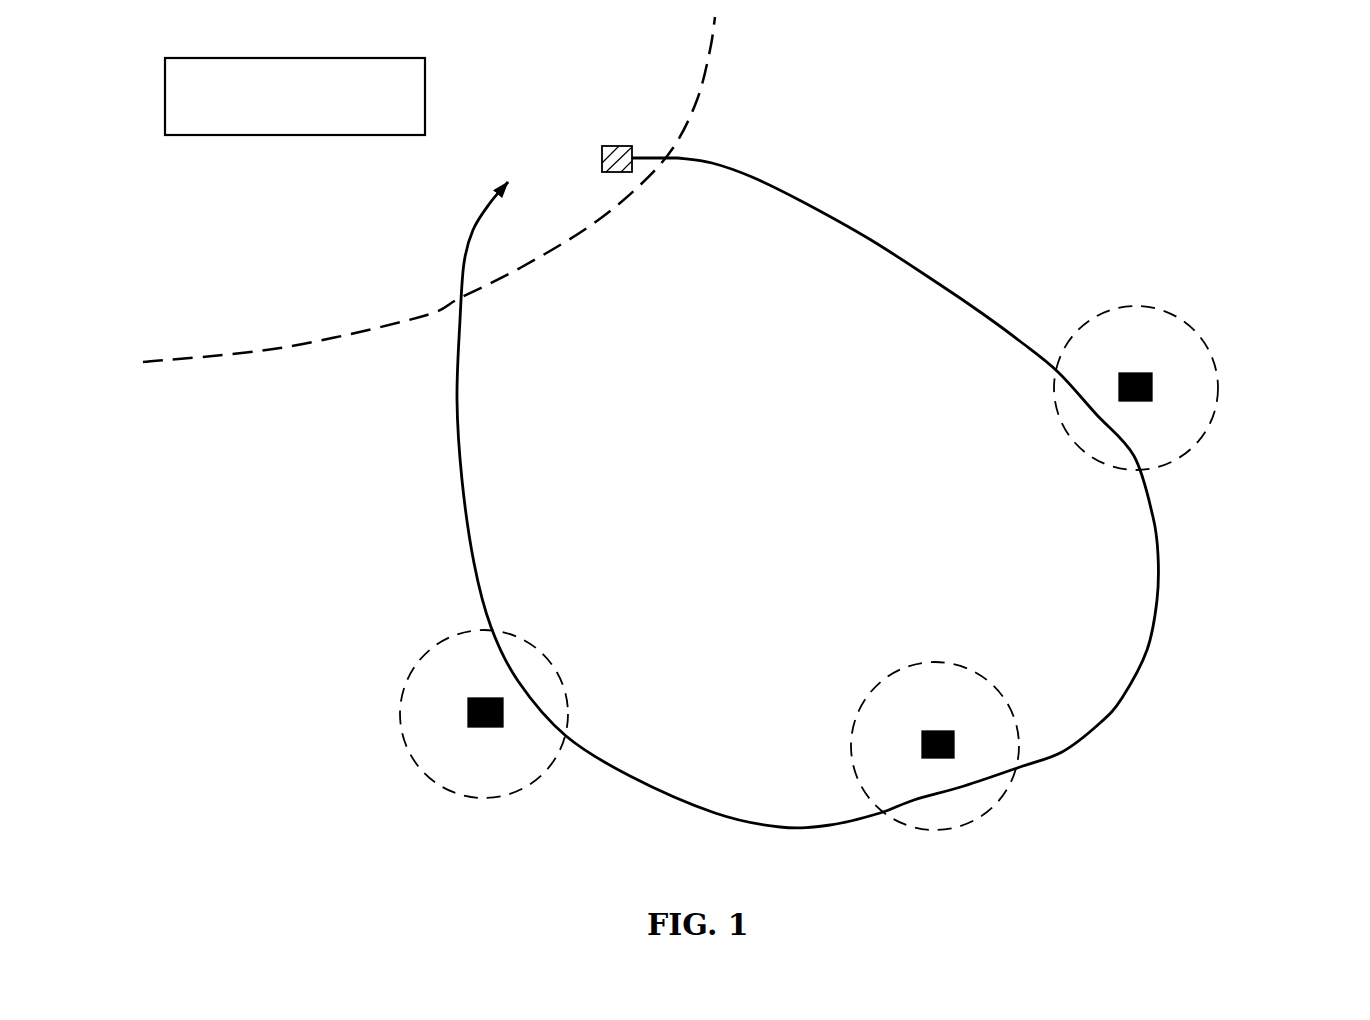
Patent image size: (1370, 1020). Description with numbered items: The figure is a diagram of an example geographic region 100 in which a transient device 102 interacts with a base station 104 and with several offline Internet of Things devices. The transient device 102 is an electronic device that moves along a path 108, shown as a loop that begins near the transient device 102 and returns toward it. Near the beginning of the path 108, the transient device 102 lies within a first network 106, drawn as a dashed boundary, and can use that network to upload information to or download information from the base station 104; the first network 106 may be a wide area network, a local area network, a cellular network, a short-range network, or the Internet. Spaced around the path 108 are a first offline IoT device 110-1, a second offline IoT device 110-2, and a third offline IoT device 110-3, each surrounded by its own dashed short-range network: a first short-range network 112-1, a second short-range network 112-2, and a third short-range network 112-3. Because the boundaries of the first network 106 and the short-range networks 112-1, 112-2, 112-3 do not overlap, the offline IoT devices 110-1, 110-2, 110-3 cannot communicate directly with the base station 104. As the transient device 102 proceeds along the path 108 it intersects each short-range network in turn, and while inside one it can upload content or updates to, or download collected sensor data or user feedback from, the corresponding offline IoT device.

The geographic region 100 is at (1301, 120).
The transient device 102 is at (616, 144).
The base station 104 is at (295, 96).
The first network 106 is at (280, 352).
The path 108 is at (946, 283).
The first offline IoT device 110-1 is at (1153, 371).
The second offline IoT device 110-2 is at (953, 729).
The third offline IoT device 110-3 is at (466, 712).
The first short-range network 112-1 is at (1221, 364).
The second short-range network 112-2 is at (1022, 723).
The third short-range network 112-3 is at (396, 720).